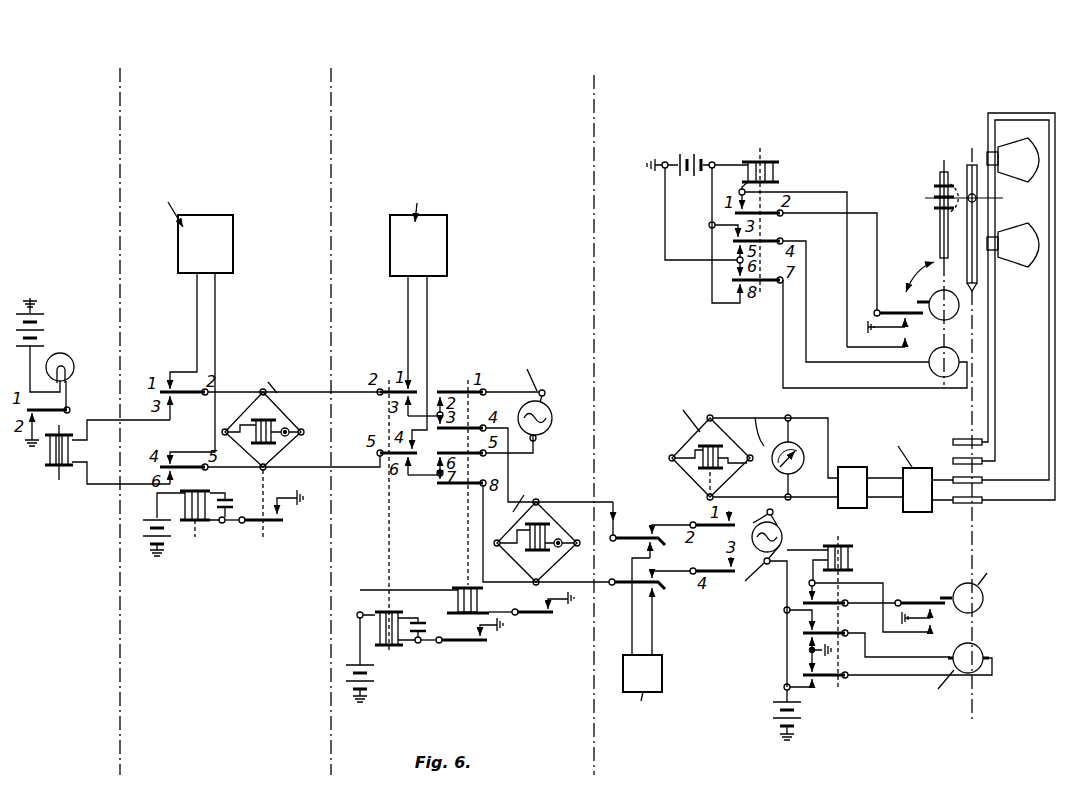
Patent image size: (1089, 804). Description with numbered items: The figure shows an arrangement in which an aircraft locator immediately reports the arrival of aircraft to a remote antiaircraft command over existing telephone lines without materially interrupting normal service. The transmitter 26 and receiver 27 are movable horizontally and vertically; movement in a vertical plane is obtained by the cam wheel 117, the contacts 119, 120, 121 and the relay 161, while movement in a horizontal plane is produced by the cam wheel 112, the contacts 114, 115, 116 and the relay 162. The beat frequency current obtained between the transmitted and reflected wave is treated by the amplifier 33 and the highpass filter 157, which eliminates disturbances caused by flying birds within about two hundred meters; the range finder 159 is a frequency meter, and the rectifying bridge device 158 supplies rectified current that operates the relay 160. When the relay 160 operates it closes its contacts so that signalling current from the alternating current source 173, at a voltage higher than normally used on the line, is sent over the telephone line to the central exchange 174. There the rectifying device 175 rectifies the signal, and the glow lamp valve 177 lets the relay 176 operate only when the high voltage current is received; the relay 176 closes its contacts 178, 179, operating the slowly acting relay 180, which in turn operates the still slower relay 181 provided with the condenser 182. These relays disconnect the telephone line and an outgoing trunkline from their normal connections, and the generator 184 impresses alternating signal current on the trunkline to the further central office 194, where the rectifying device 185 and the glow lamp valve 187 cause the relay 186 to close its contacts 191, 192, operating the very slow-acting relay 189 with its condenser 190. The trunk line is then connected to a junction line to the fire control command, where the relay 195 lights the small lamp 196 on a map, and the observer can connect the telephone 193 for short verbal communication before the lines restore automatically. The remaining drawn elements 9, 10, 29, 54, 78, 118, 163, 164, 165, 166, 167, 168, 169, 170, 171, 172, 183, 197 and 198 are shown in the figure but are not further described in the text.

The contact 9 is at (493, 637).
The contact 10 is at (451, 649).
The transmitter 26 is at (1013, 245).
The receiver 27 is at (1013, 160).
The pivoted rod 29 is at (978, 228).
The amplifier 33 is at (891, 468).
The wheel 54 is at (944, 362).
The motor 78 is at (949, 673).
The cam wheel 112 is at (972, 583).
The contact 114 is at (918, 593).
The contact 115 is at (932, 617).
The contact 116 is at (889, 613).
The cam wheel 117 is at (944, 240).
The contact stud 118 is at (908, 300).
The contact 119 is at (884, 304).
The contact 120 is at (903, 328).
The contact 121 is at (892, 347).
The highpass filter 157 is at (848, 477).
The rectifying bridge device 158 is at (686, 436).
The range finder 159 is at (793, 447).
The relay 160 is at (711, 449).
The relay 161 is at (762, 161).
The relay 162 is at (855, 560).
The contact 163 is at (671, 518).
The contact arm 164 is at (637, 523).
The contact 165 is at (659, 598).
The contact 166 is at (674, 575).
The contact arm 167 is at (633, 591).
The contact 168 is at (668, 621).
The brush 169 is at (986, 447).
The brush 170 is at (986, 466).
The brush 171 is at (986, 485).
The brush 172 is at (986, 505).
The alternating current source 173 is at (753, 564).
The central exchange 174 is at (413, 306).
The rectifying device 175 is at (552, 513).
The relay 176 is at (525, 547).
The glow lamp valve 177 is at (567, 553).
The contact 178 is at (521, 629).
The contact 179 is at (538, 606).
The slowly acting relay 180 is at (479, 598).
The slow-acting relay 181 is at (387, 639).
The condenser 182 is at (809, 717).
The battery 183 is at (376, 660).
The generator 184 is at (552, 408).
The rectifying device 185 is at (275, 398).
The relay 186 is at (294, 443).
The glow lamp valve 187 is at (290, 431).
The very slow-acting relay 189 is at (188, 518).
The condenser 190 is at (236, 500).
The contact 191 is at (299, 507).
The contact 192 is at (251, 530).
The telephone 193 is at (145, 529).
The central office 194 is at (191, 312).
The relay 195 is at (46, 458).
The small lamp 196 is at (72, 367).
The battery 197 is at (39, 335).
The telephone station 198 is at (645, 698).